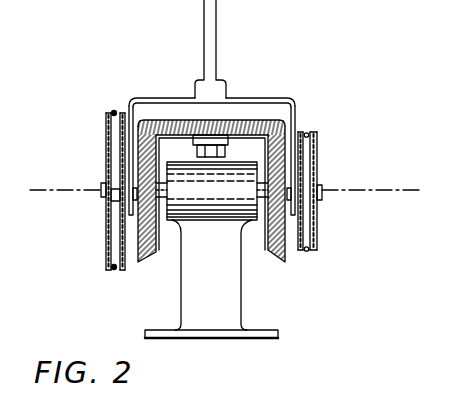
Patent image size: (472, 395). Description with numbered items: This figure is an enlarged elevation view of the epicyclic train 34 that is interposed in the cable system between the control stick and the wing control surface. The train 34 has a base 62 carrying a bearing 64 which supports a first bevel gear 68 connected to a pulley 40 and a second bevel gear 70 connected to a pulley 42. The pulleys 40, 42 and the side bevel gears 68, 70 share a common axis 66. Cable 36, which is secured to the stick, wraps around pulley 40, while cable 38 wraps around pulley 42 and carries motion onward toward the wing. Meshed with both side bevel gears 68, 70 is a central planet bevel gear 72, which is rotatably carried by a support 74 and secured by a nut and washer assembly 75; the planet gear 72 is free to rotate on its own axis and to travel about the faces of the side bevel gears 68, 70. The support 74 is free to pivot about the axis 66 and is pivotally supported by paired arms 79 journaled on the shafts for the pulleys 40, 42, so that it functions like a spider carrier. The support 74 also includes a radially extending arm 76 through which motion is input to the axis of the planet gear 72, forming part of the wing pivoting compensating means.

The epicyclic train 34 is at (168, 285).
The cable 36 is at (309, 134).
The cable 38 is at (114, 113).
The pulley 40 is at (316, 153).
The pulley 42 is at (107, 141).
The base 62 is at (220, 311).
The bearing 64 is at (226, 195).
The axis 66 is at (365, 190).
The first bevel gear 68 is at (272, 256).
The second bevel gear 70 is at (152, 256).
The central planet bevel gear 72 is at (275, 120).
The support 74 is at (235, 85).
The nut and washer assembly 75 is at (196, 149).
The radially extending arm 76 is at (216, 37).
The paired arms 79 is at (133, 112).